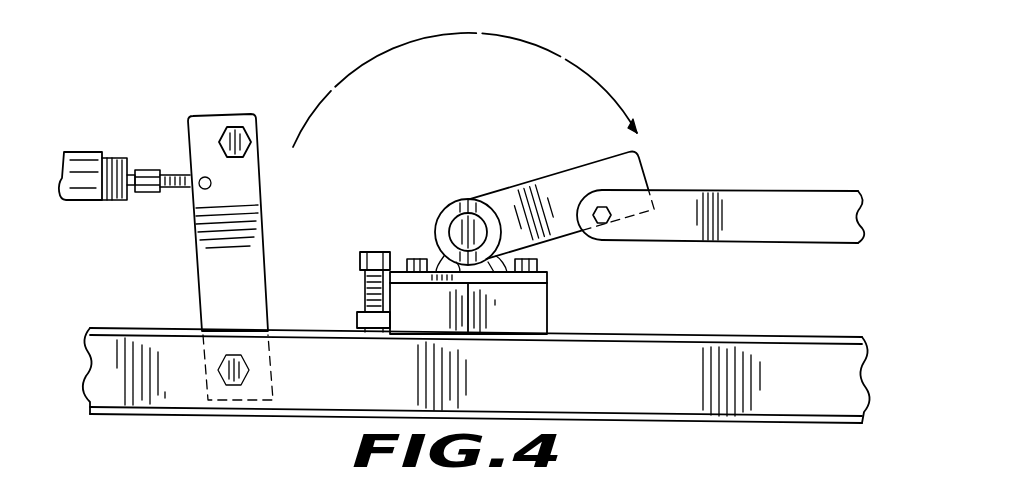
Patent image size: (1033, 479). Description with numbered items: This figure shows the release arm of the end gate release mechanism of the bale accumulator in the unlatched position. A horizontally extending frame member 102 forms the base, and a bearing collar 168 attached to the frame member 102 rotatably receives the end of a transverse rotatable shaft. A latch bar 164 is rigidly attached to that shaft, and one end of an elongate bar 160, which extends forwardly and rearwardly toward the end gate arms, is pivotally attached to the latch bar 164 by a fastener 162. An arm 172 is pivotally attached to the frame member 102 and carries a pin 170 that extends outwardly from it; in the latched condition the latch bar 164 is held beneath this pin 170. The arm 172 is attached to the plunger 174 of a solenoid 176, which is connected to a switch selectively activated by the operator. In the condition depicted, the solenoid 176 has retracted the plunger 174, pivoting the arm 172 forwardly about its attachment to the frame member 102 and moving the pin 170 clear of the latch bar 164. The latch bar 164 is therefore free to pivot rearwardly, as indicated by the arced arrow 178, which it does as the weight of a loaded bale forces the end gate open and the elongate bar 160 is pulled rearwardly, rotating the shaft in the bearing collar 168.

The frame member 102 is at (771, 337).
The elongate bar 160 is at (773, 190).
The fastener 162 is at (606, 225).
The latch bar 164 is at (578, 165).
The bearing collar 168 is at (443, 221).
The pin 170 is at (235, 126).
The arm 172 is at (212, 274).
The plunger 174 is at (128, 192).
The solenoid 176 is at (82, 150).
The arced arrow 178 is at (585, 77).